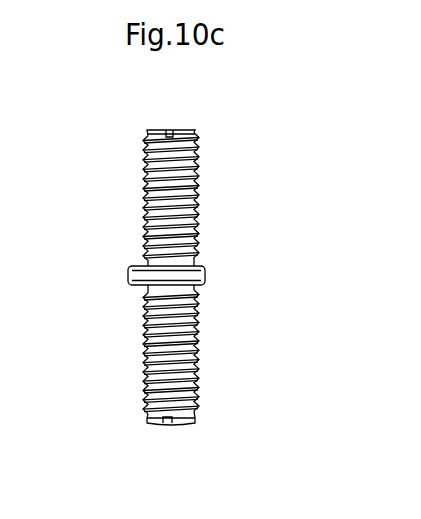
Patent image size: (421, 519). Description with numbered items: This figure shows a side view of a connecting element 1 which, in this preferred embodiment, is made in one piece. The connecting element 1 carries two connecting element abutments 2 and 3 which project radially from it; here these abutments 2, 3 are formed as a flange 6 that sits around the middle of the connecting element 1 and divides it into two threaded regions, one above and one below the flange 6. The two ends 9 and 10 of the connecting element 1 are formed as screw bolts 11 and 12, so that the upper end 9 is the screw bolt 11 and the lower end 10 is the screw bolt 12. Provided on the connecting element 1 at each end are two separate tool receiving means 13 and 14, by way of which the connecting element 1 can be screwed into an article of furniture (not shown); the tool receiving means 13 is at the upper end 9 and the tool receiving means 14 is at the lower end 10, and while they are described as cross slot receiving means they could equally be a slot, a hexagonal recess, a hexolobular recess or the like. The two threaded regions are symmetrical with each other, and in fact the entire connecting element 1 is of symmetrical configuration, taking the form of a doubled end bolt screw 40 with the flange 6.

The connecting element 1 is at (192, 274).
The connecting element abutment 2 is at (232, 224).
The connecting element abutment 3 is at (154, 399).
The flange 6 is at (208, 273).
The end 9 is at (179, 88).
The end 10 is at (142, 460).
The screw bolt 11 is at (145, 183).
The screw bolt 12 is at (193, 357).
The tool receiving means 13 is at (173, 130).
The tool receiving means 14 is at (165, 420).
The doubled end bolt screw 40 is at (193, 153).